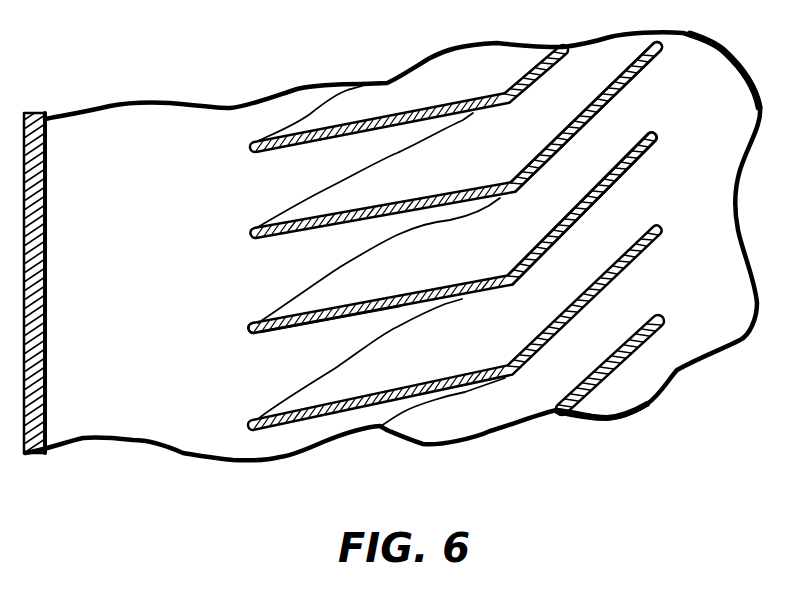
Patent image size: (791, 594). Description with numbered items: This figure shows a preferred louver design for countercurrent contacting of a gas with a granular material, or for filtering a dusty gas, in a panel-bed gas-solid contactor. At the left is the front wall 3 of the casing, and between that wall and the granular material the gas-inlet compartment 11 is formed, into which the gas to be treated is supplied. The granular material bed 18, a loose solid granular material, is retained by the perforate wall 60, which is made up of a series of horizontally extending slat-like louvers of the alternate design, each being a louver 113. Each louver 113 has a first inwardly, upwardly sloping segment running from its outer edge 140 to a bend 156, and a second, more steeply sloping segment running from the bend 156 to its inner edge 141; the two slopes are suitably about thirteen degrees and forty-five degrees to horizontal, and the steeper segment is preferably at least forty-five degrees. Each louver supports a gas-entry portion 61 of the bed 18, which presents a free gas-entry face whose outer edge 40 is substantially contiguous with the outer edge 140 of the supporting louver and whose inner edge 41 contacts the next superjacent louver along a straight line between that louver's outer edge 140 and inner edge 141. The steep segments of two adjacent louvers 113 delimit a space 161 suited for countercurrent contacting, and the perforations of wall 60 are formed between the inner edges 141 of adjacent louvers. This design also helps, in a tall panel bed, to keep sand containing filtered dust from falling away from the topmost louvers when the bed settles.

The front wall 3 is at (46, 186).
The gas-inlet compartment 11 is at (119, 263).
The granular material bed 18 is at (728, 310).
The outer edge of gas-entry face 40 is at (247, 224).
The inner edge of gas-entry face 41 is at (475, 113).
The perforate wall 60 is at (241, 308).
The gas-entry portion 61 is at (437, 181).
The louver 113 is at (313, 322).
The outer edge 140 is at (250, 326).
The inner edge 141 is at (655, 136).
The bend 156 is at (504, 274).
The space 161 is at (580, 191).